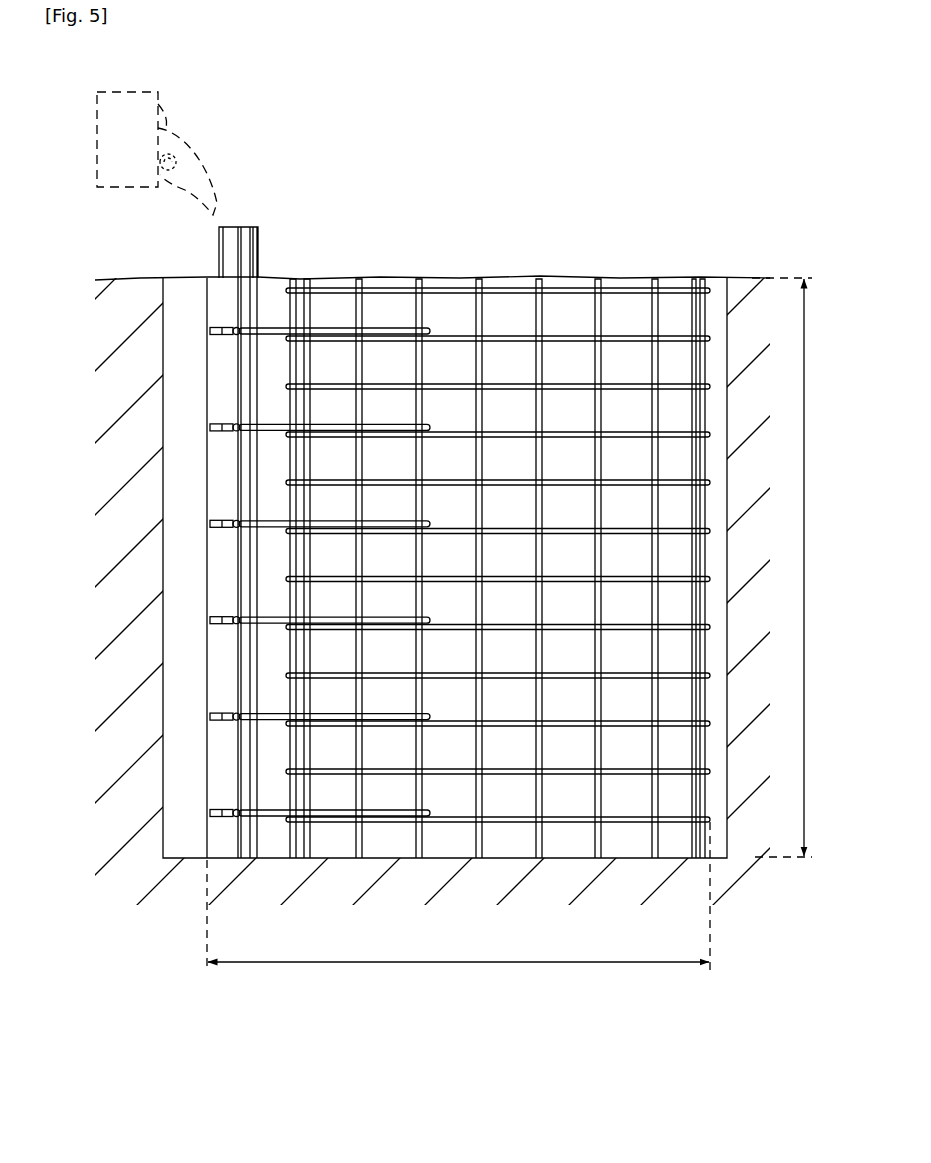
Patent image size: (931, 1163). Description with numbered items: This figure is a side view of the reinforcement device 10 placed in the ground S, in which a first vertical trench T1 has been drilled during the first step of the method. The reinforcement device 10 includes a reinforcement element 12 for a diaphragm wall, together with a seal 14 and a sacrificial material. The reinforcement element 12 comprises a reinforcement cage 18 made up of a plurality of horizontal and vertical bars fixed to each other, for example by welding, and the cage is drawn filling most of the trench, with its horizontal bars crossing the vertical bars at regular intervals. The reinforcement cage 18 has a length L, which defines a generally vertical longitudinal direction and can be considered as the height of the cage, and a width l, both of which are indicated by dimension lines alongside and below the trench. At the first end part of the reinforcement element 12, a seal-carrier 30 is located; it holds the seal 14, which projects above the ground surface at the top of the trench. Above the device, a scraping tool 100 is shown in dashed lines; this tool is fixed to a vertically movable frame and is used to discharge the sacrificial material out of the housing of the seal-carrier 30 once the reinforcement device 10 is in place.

The scraping tool 100 is at (166, 106).
The seal 14 is at (261, 223).
The seal-carrier 30 is at (206, 272).
The reinforcement element 12 is at (275, 313).
The reinforcement device 10 is at (456, 243).
The reinforcement cage 18 is at (559, 275).
The ground S is at (762, 350).
The first vertical trench T1 is at (196, 840).
The length L is at (785, 567).
The width l is at (458, 907).